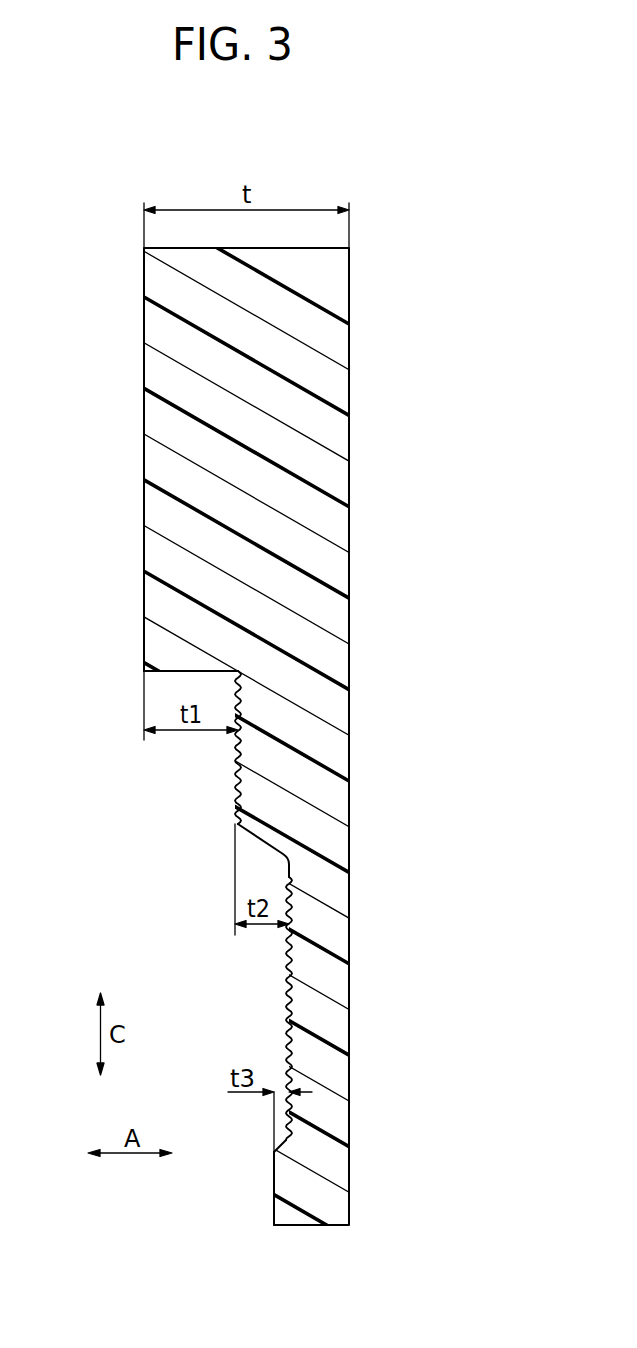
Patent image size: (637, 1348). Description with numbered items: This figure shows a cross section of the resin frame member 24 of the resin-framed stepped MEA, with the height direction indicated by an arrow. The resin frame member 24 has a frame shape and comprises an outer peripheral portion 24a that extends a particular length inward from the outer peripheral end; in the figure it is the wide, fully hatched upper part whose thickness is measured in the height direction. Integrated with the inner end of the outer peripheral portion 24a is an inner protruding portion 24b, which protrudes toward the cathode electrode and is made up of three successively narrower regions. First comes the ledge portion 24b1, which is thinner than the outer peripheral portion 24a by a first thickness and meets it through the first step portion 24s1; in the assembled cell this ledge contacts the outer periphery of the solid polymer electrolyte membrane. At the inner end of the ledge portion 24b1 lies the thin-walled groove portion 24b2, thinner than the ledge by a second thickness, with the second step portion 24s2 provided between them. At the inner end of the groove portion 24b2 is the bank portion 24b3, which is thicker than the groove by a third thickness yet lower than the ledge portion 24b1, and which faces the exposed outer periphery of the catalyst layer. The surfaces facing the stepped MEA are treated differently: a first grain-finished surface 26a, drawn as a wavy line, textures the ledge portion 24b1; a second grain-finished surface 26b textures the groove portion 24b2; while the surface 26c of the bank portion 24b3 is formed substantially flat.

The resin frame member 24 is at (348, 144).
The outer peripheral portion 24a is at (332, 342).
The inner protruding portion 24b is at (443, 726).
The ledge portion 24b1 is at (330, 752).
The groove portion 24b2 is at (330, 998).
The bank portion 24b3 is at (332, 1185).
The first step portion 24s1 is at (177, 672).
The second step portion 24s2 is at (262, 843).
The first grain-finished surface 26a is at (236, 775).
The second grain-finished surface 26b is at (286, 992).
The surface 26c is at (273, 1178).